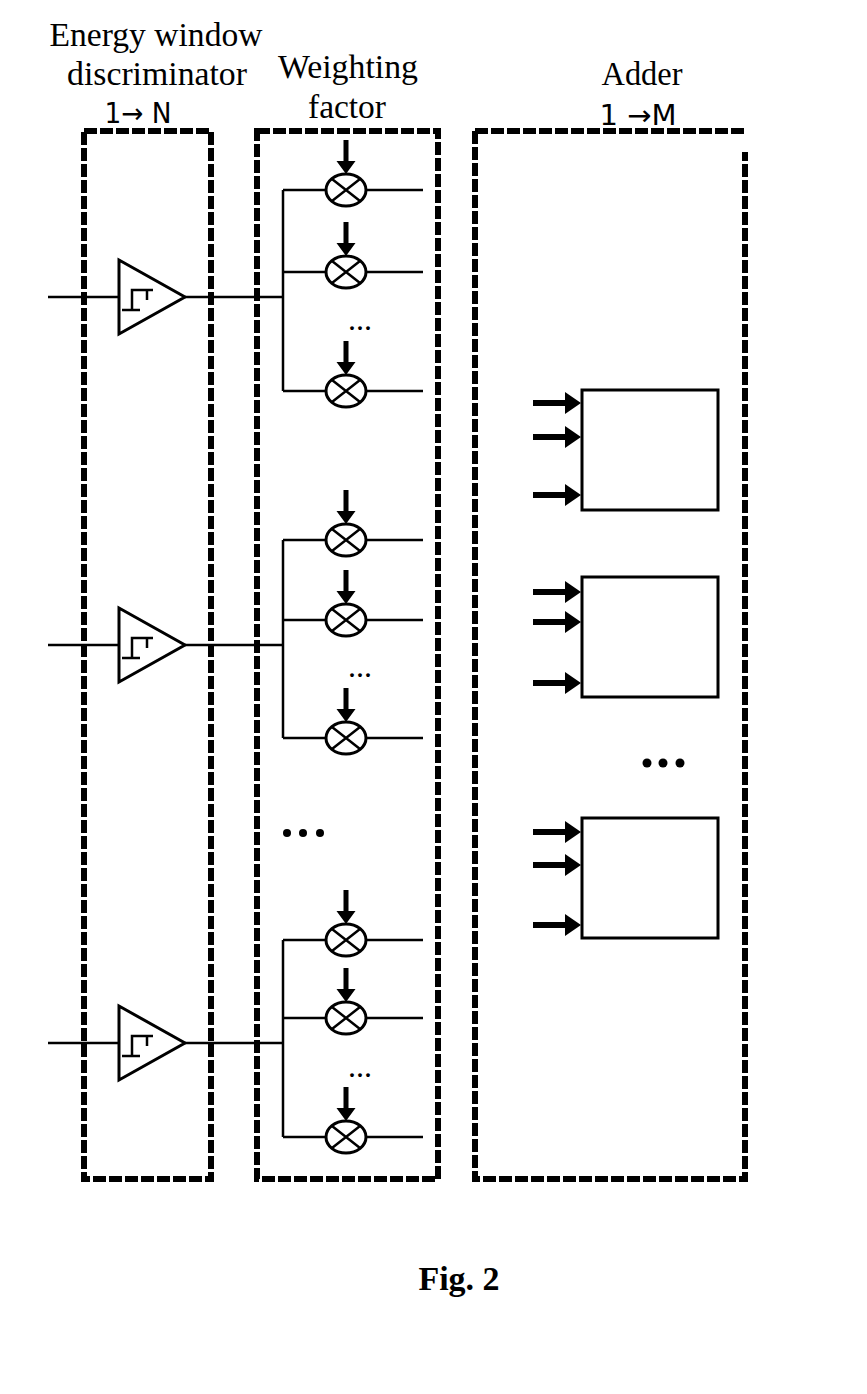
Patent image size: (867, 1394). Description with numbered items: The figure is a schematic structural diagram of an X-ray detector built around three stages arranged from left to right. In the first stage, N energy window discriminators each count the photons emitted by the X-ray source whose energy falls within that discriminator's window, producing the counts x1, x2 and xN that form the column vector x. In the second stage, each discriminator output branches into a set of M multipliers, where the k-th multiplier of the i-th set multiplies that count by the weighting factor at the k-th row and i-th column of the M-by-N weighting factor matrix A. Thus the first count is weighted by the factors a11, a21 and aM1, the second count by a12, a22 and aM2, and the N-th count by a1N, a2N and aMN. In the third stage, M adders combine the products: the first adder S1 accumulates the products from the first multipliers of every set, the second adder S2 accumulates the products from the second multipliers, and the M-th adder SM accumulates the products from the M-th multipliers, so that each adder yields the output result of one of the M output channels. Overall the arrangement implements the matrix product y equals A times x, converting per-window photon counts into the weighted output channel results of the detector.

The first energy window discriminator count x1 is at (152, 312).
The second energy window discriminator count x2 is at (152, 660).
The N-th energy window discriminator count xN is at (152, 1057).
The weighting factor at first row and first column a11 is at (365, 173).
The weighting factor at second row and first column a21 is at (365, 255).
The weighting factor at M-th row and first column aM1 is at (370, 374).
The weighting factor at first row and second column a12 is at (365, 523).
The weighting factor at second row and second column a22 is at (365, 603).
The weighting factor at M-th row and second column aM2 is at (370, 721).
The weighting factor at first row and N-th column a1N is at (365, 923).
The weighting factor at second row and N-th column a2N is at (367, 1001).
The weighting factor at M-th row and N-th column aMN is at (371, 1120).
The first adder S1 is at (598, 437).
The second adder S2 is at (598, 625).
The M-th adder SM is at (597, 867).